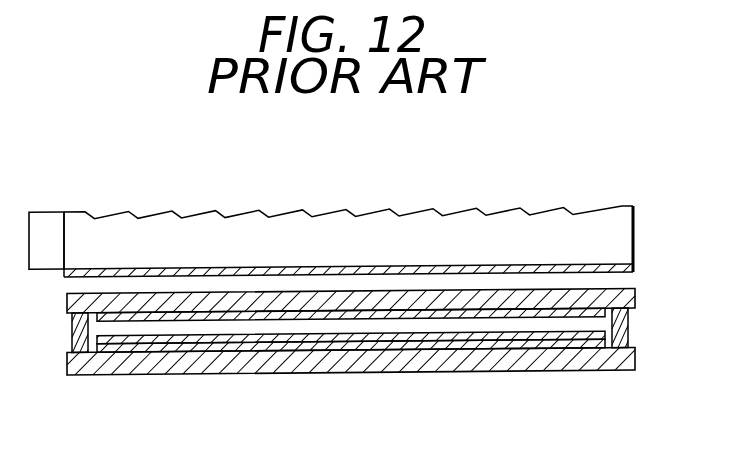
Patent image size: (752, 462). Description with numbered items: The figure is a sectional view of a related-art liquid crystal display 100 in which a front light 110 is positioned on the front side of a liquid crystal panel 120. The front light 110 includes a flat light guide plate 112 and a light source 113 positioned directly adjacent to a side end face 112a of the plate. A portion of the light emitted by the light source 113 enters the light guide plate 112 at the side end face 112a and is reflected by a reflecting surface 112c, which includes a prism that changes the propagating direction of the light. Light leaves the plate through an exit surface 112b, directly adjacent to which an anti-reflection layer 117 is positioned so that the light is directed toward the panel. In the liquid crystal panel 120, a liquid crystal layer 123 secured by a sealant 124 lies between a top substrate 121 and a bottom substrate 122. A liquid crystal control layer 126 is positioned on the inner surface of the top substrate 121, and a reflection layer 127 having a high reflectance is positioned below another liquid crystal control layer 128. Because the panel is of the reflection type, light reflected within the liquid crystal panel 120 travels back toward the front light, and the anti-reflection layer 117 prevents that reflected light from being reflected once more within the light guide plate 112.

The liquid crystal display 100 is at (600, 171).
The front light 110 is at (641, 214).
The light guide plate 112 is at (618, 248).
The side end face 112a is at (64, 245).
The exit surface 112b is at (558, 262).
The reflecting surface 112c is at (414, 209).
The light source 113 is at (45, 258).
The anti-reflection layer 117 is at (633, 265).
The liquid crystal panel 120 is at (586, 380).
The top substrate 121 is at (620, 297).
The bottom substrate 122 is at (633, 357).
The liquid crystal layer 123 is at (630, 322).
The sealant 124 is at (82, 345).
The liquid crystal control layer 126 is at (383, 313).
The reflection layer 127 is at (478, 347).
The liquid crystal control layer 128 is at (543, 338).